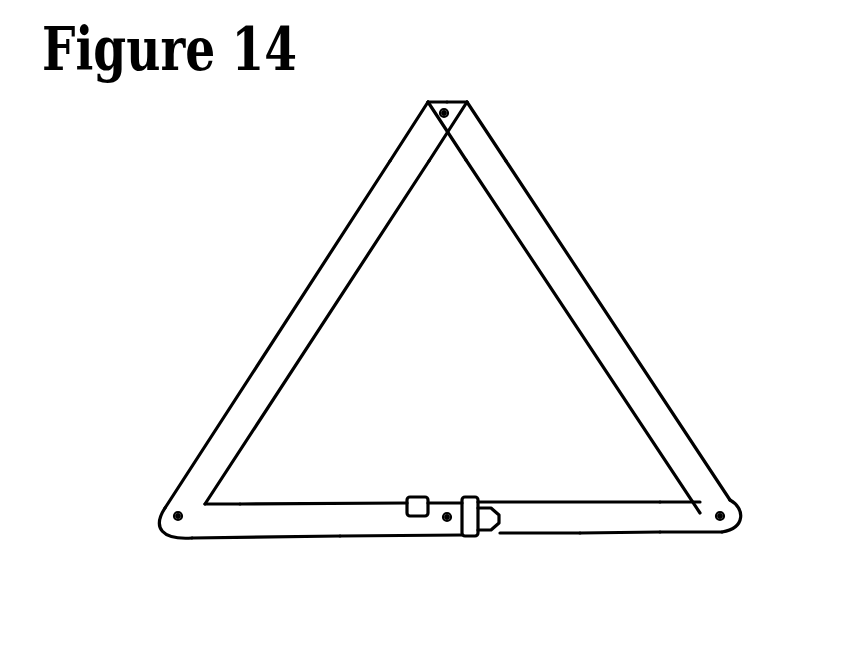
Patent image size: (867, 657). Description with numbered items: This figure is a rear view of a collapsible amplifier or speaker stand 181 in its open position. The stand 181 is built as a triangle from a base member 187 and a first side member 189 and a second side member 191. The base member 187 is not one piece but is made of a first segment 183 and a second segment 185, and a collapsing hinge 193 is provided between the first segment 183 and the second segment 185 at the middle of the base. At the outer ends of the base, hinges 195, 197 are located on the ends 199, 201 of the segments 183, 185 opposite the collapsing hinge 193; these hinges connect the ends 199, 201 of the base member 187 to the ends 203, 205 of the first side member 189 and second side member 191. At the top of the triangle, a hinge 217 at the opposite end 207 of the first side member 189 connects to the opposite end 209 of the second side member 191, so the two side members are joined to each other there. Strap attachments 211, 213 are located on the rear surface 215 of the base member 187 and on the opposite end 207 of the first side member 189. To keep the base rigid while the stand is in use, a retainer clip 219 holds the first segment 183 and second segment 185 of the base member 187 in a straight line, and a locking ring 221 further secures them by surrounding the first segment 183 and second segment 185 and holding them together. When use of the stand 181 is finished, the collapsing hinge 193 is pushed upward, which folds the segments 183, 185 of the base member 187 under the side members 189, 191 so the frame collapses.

The stand 181 is at (662, 232).
The first segment of base member 183 is at (302, 548).
The second segment of base member 185 is at (627, 535).
The base member 187 is at (358, 550).
The first side member 189 is at (290, 318).
The second side member 191 is at (645, 366).
The collapsing hinge 193 is at (447, 521).
The hinge 195 is at (172, 523).
The hinge 197 is at (741, 527).
The end of first segment 199 is at (198, 528).
The end of second segment 201 is at (702, 534).
The end of first side member 203 is at (181, 498).
The end of second side member 205 is at (710, 487).
The opposite end of first side member 207 is at (430, 125).
The opposite end of second side member 209 is at (470, 131).
The strap attachment 211 is at (434, 103).
The strap attachment 213 is at (457, 497).
The rear surface of base member 215 is at (557, 534).
The hinge 217 is at (461, 101).
The retainer clip 219 is at (416, 497).
The locking ring 221 is at (481, 497).